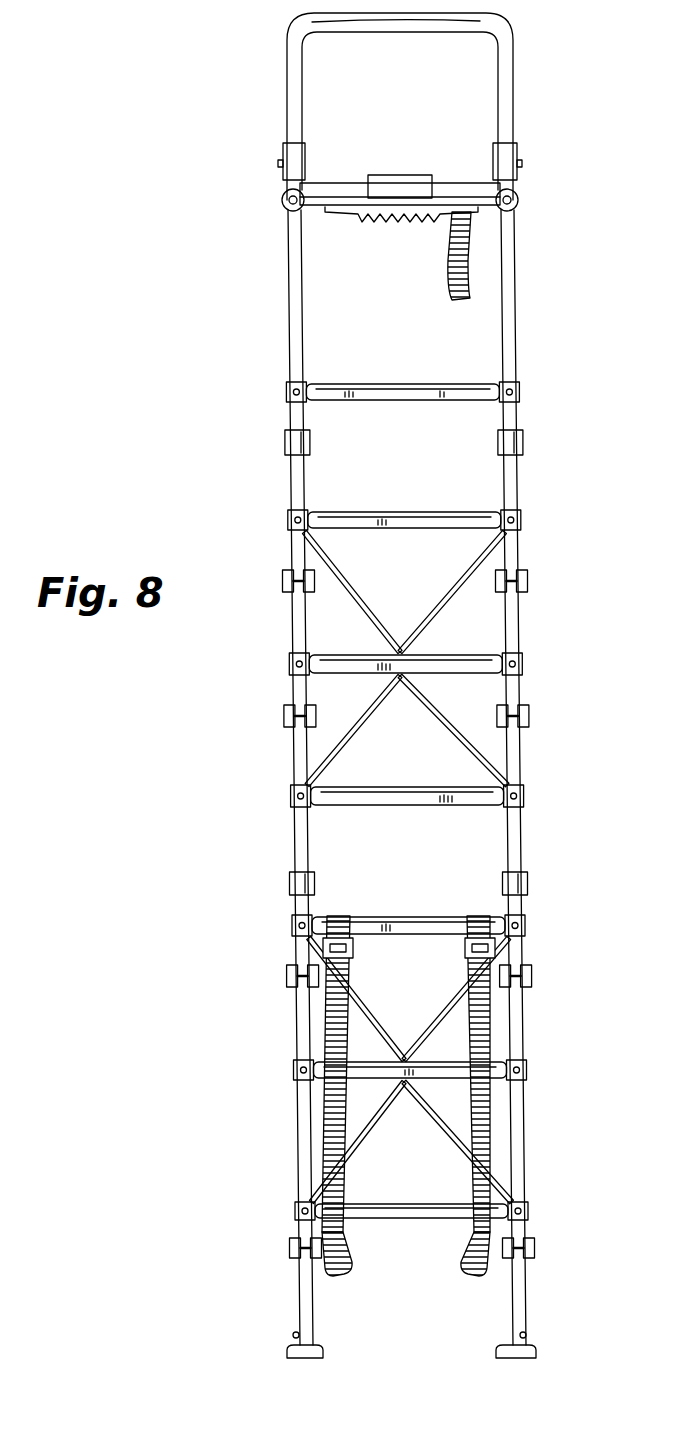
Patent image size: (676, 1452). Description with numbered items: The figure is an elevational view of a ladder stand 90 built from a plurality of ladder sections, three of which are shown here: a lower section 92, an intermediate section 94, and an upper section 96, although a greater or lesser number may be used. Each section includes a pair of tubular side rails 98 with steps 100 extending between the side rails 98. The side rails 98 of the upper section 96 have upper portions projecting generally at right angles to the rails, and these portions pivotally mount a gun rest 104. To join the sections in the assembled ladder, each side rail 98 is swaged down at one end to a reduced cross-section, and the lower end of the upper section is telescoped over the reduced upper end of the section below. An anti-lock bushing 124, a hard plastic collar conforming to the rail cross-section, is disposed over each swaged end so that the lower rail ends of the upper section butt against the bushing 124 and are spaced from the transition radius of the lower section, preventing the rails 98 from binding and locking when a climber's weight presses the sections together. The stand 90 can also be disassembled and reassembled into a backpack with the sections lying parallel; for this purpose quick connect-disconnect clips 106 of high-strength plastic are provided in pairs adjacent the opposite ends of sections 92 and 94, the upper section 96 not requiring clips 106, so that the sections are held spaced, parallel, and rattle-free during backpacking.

The ladder stand 90 is at (176, 458).
The ladder section 92 is at (297, 1043).
The ladder section 94 is at (297, 752).
The upper section 96 is at (290, 348).
The tubular side rail 98 is at (290, 233).
The step 100 is at (386, 1200).
The gun rest 104 is at (290, 66).
The quick connect-disconnect clip 106 is at (290, 967).
The anti-lock bushing 124 is at (283, 433).